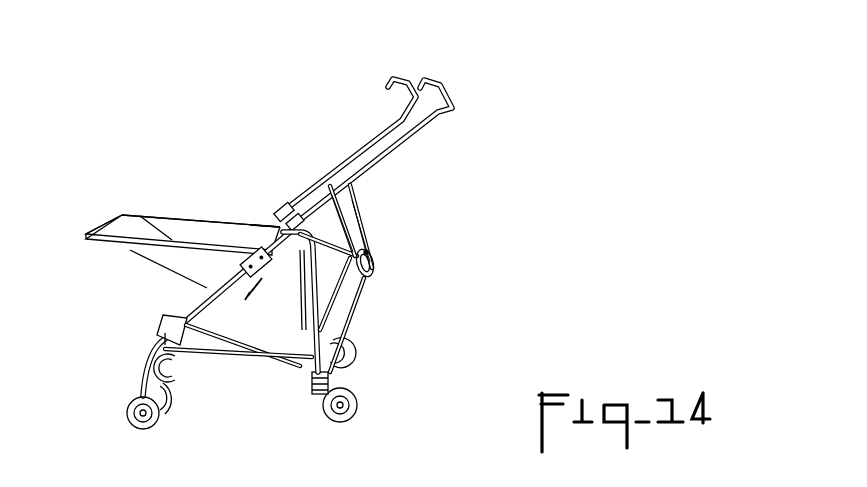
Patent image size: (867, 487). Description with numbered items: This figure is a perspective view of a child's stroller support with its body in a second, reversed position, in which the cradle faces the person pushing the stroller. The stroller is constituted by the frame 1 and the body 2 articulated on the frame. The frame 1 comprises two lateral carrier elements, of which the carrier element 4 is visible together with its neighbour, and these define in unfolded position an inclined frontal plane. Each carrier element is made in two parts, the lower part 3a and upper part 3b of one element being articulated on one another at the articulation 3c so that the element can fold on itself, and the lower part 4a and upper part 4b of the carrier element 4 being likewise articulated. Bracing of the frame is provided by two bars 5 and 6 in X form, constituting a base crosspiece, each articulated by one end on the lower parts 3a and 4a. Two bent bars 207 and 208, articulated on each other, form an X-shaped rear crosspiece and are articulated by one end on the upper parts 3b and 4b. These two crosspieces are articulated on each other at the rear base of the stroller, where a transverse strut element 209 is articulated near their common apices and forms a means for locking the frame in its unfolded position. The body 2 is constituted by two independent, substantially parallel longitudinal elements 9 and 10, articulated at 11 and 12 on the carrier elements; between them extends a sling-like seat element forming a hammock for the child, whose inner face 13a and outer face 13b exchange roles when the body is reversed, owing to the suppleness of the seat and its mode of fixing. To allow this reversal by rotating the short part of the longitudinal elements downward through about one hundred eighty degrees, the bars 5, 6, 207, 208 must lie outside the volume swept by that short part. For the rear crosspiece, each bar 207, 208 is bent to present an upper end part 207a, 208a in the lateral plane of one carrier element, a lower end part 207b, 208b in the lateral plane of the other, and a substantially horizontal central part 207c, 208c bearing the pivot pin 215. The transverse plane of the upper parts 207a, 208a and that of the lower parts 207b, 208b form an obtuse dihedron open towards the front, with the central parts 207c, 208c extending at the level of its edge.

The frame 1 is at (271, 260).
The body 2 is at (164, 213).
The lower part of carrier element 3a is at (208, 314).
The upper part of carrier element 3b is at (407, 133).
The articulation 3c is at (248, 258).
The lateral carrier element 4 is at (265, 212).
The lower part of carrier element 4a is at (180, 303).
The upper part of carrier element 4b is at (368, 143).
The bar 5 is at (252, 337).
The bar 6 is at (208, 350).
The longitudinal element 9 is at (104, 233).
The longitudinal element 10 is at (185, 218).
The articulation 11 is at (267, 232).
The articulation 12 is at (277, 232).
The inner face of seat element 13a is at (148, 250).
The outer face of seat element 13b is at (147, 227).
The bent bar 207 is at (362, 192).
The upper end part 207a is at (368, 228).
The lower end part 207b is at (335, 298).
The central part 207c is at (370, 250).
The bent bar 208 is at (328, 187).
The upper end part 208a is at (340, 212).
The lower end part 208b is at (352, 332).
The central part 208c is at (372, 282).
The transverse strut element 209 is at (305, 350).
The pivot pin 215 is at (376, 263).